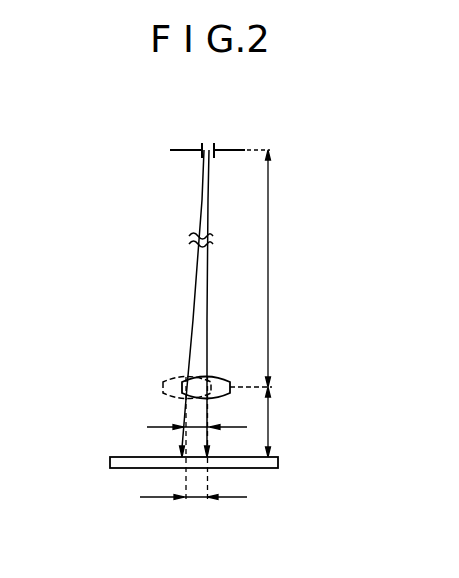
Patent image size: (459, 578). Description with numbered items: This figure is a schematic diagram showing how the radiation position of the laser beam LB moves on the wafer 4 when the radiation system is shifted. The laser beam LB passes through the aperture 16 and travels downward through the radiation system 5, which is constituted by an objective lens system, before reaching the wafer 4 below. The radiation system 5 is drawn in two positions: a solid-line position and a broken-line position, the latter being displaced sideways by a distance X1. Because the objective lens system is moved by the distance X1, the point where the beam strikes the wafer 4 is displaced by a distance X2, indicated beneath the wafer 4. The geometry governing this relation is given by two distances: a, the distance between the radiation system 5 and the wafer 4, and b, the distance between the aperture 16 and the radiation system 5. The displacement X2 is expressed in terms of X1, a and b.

The aperture 16 is at (231, 148).
The laser beam LB is at (207, 308).
The radiation system 5 is at (219, 376).
The wafer 4 is at (128, 457).
The distance of radiation system movement X1 is at (197, 428).
The displacement of beam radiation position X2 is at (193, 498).
The distance between radiation system and wafer a is at (269, 410).
The distance between aperture and radiation system b is at (270, 292).